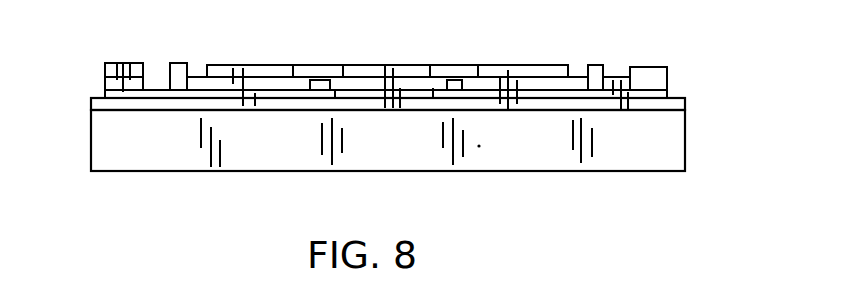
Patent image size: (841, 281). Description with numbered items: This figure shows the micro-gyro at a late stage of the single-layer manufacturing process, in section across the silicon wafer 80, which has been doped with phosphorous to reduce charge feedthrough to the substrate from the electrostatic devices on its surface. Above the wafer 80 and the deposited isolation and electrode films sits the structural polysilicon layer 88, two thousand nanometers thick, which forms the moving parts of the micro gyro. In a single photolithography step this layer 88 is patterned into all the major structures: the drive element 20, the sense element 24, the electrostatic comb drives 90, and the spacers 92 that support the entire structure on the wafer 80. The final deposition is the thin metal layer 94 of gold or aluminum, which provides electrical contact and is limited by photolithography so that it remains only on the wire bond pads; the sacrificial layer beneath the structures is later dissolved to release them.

The drive element 20 is at (272, 64).
The sense element 24 is at (402, 65).
The silicon wafer 80 is at (608, 152).
The polysilicon layer 88 is at (220, 70).
The electrostatic comb drive 90 is at (593, 65).
The spacer 92 is at (655, 67).
The metal layer 94 is at (462, 83).